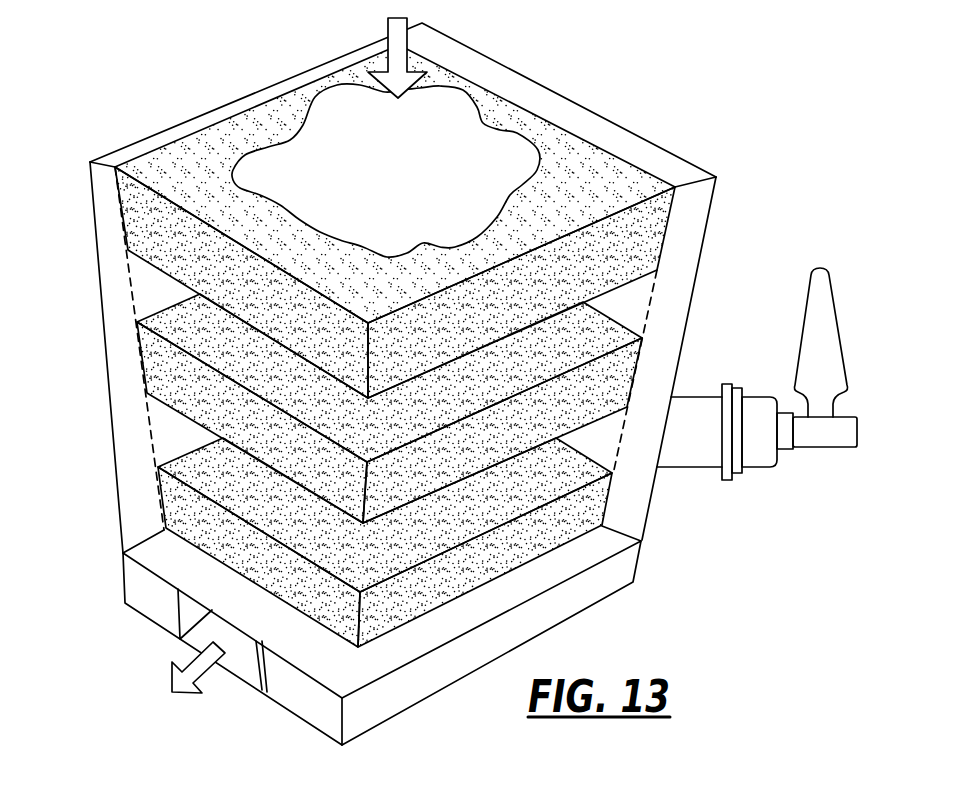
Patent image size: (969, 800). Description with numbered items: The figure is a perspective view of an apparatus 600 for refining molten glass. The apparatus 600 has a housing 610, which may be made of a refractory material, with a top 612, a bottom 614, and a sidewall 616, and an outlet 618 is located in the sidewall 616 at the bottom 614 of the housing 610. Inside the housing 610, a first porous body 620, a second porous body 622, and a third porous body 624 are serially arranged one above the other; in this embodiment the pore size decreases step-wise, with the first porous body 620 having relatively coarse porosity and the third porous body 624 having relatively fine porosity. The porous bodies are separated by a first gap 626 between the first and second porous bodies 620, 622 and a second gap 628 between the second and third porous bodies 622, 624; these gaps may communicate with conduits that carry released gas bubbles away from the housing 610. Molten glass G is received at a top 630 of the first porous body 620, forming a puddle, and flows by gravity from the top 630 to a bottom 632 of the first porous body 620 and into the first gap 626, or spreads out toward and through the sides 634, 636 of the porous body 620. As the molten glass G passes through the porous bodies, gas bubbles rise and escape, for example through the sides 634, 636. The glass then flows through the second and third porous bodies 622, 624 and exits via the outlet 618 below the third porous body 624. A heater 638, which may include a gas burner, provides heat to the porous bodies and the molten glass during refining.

The apparatus 600 is at (150, 68).
The housing 610 is at (262, 90).
The top 612 is at (100, 153).
The first porous body 620 is at (668, 222).
The second porous body 622 is at (637, 368).
The third porous body 624 is at (608, 497).
The first gap 626 is at (142, 288).
The second gap 628 is at (163, 437).
The top 630 is at (392, 296).
The bottom 632 is at (276, 358).
The side 634 is at (277, 303).
The side 636 is at (562, 299).
The heater 638 is at (833, 298).
The bottom 614 is at (402, 712).
The sidewall 616 is at (138, 577).
The outlet 618 is at (247, 663).
The molten glass G is at (480, 102).